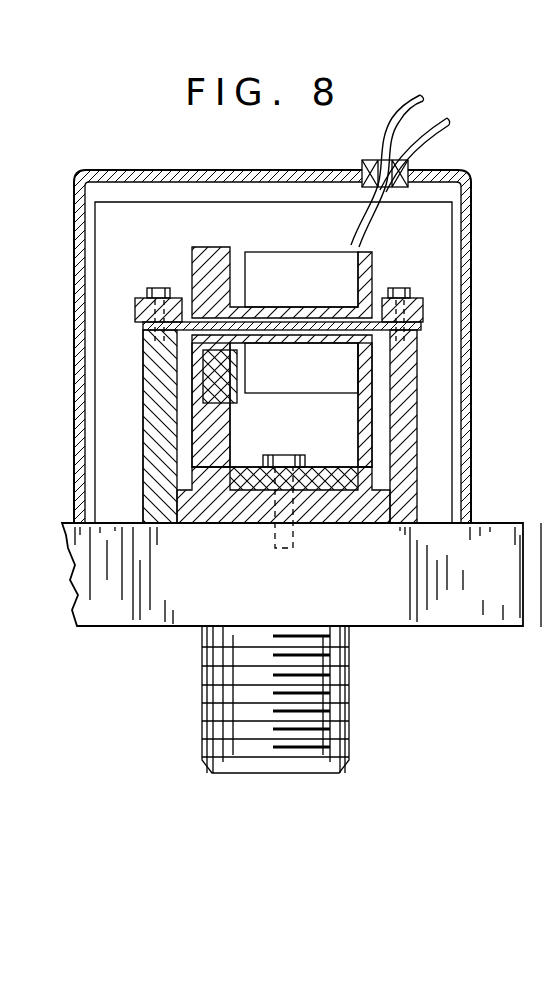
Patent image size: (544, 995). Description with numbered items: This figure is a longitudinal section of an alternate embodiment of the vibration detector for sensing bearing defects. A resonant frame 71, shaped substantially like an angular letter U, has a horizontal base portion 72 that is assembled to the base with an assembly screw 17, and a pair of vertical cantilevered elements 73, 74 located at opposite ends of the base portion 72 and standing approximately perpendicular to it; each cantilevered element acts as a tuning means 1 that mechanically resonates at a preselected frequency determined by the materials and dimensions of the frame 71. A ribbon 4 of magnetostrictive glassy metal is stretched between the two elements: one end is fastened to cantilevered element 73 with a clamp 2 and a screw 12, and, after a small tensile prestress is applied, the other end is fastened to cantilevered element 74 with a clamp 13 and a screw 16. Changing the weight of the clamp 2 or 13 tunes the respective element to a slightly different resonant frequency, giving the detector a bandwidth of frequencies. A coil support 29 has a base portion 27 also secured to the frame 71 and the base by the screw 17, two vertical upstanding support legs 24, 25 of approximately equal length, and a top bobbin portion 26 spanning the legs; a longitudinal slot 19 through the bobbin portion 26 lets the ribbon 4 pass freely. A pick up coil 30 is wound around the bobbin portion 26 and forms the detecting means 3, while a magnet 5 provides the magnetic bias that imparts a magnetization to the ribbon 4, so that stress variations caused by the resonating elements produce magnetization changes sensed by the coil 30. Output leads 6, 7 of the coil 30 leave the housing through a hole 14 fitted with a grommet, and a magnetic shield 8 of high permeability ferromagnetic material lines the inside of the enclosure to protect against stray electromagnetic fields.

The tuning means 1 is at (143, 506).
The clamp 2 is at (136, 302).
The detecting means 3 is at (210, 247).
The ribbon 4 is at (178, 332).
The magnet 5 is at (233, 388).
The output lead 6 is at (448, 125).
The output lead 7 is at (394, 115).
The magnetic shield 8 is at (96, 230).
The screw 12 is at (156, 289).
The clamp 13 is at (420, 312).
The hole 14 is at (403, 171).
The screw 16 is at (404, 290).
The assembly screw 17 is at (290, 458).
The longitudinal slot 19 is at (266, 322).
The support leg 24 is at (364, 412).
The support leg 25 is at (222, 442).
The bobbin portion 26 is at (284, 345).
The base portion 27 is at (328, 470).
The coil support 29 is at (227, 490).
The coil 30 is at (301, 258).
The frame 71 is at (233, 516).
The horizontal base portion 72 is at (322, 518).
The cantilevered element 73 is at (156, 420).
The cantilevered element 74 is at (403, 415).